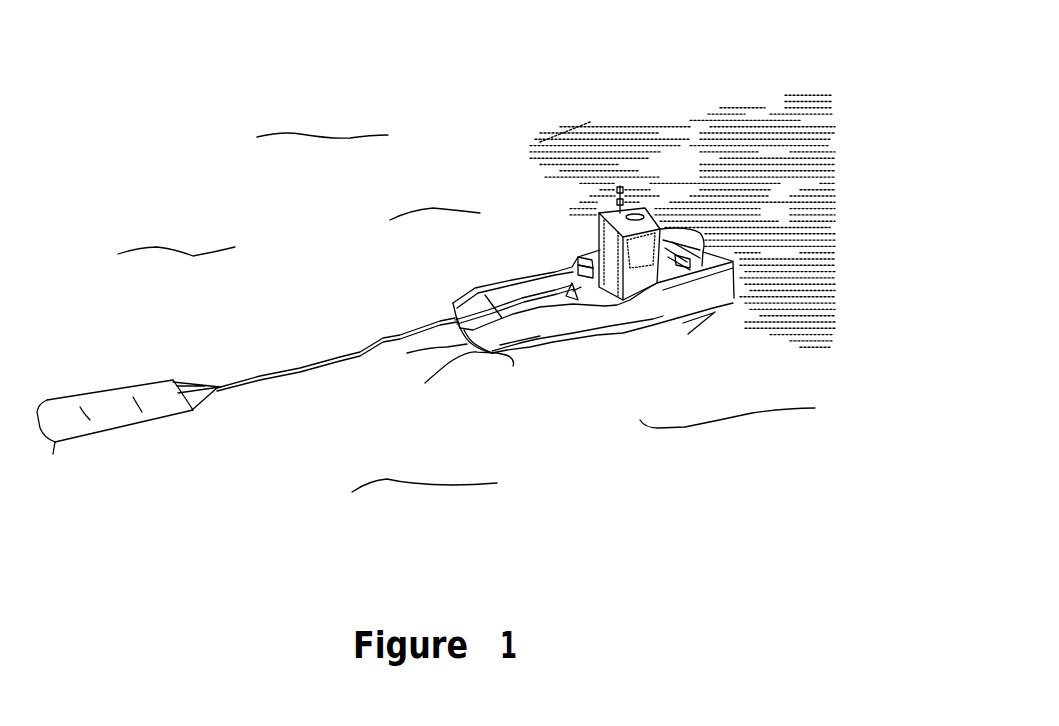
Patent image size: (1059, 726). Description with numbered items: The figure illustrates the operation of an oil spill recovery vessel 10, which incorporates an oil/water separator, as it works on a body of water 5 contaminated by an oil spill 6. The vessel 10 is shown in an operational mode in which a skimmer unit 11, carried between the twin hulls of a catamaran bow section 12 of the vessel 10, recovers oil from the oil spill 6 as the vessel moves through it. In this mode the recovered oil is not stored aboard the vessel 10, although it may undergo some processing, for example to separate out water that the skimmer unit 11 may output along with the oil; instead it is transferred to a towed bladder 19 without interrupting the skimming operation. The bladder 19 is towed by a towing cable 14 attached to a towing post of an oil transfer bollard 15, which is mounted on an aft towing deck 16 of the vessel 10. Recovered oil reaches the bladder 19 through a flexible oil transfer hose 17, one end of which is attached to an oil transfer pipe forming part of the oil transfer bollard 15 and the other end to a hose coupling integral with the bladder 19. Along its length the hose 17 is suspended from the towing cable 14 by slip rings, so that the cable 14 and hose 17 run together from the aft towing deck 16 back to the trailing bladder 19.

The body of water 5 is at (262, 228).
The oil spill 6 is at (655, 100).
The oil spill recovery vessel 10 is at (557, 236).
The skimmer unit 11 is at (685, 265).
The catamaran bow section 12 is at (742, 248).
The towing cable 14 is at (350, 342).
The oil transfer bollard 15 is at (573, 296).
The aft towing deck 16 is at (537, 317).
The flexible oil transfer hose 17 is at (358, 357).
The towed bladder 19 is at (140, 392).